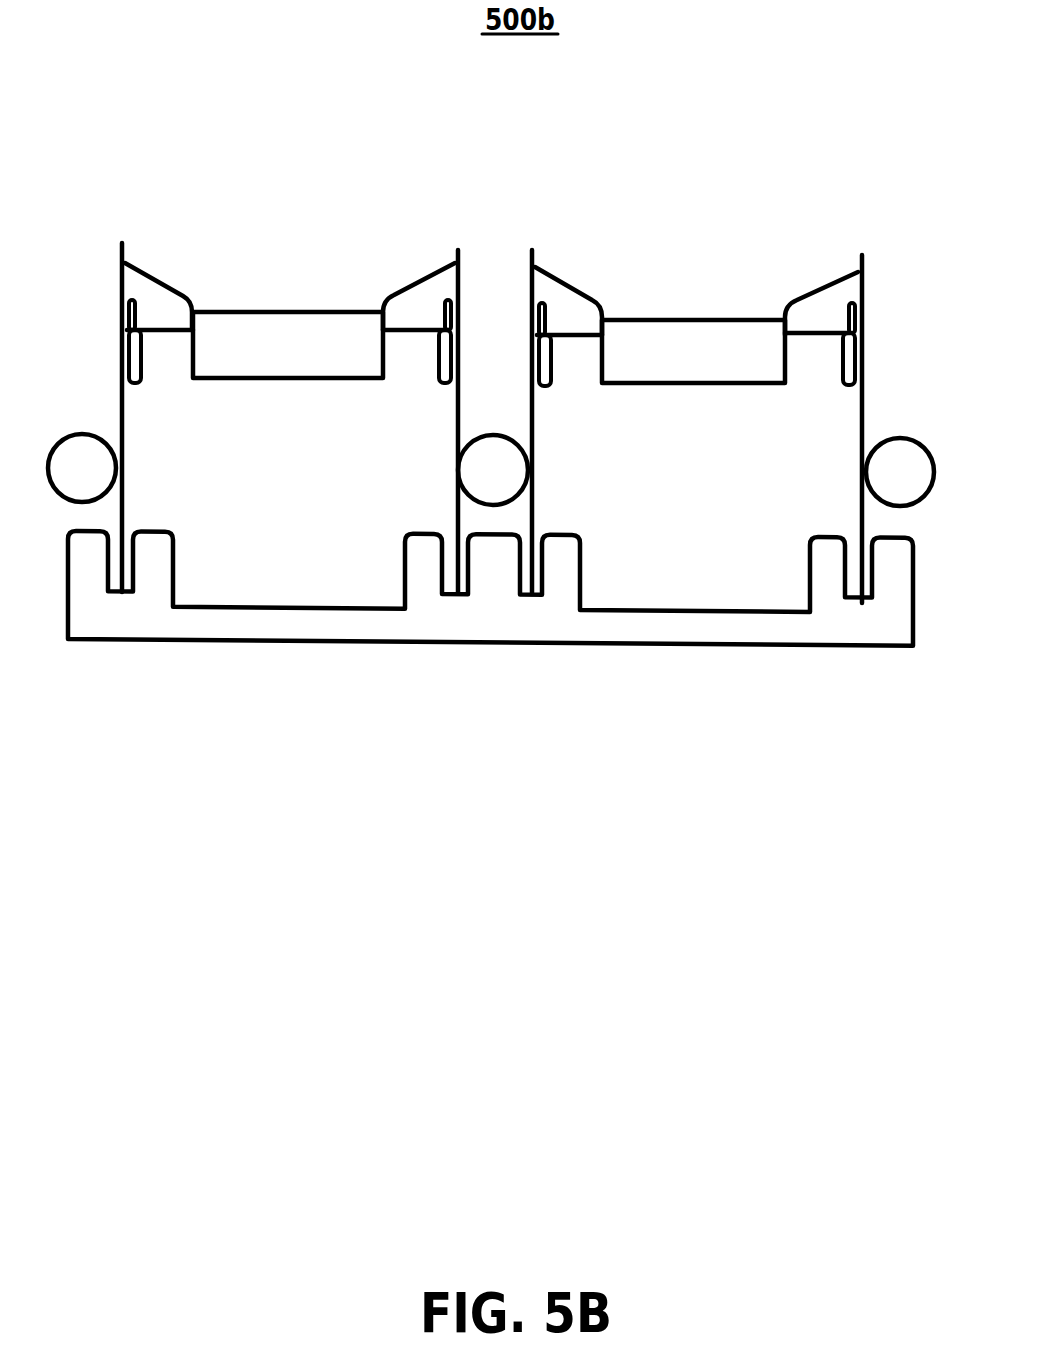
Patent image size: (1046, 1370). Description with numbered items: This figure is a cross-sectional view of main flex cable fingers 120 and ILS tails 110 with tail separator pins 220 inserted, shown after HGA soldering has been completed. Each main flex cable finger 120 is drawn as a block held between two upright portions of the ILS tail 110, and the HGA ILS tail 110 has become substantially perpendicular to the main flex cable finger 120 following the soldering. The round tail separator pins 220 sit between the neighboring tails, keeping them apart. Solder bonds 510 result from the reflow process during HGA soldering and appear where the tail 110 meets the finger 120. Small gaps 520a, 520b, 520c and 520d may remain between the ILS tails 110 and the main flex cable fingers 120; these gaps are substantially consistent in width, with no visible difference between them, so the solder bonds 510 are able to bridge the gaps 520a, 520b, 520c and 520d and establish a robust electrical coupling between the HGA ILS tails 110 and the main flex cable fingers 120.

The solder bond 510 is at (168, 262).
The main flex cable finger 120 is at (292, 292).
The gap 520a is at (161, 353).
The gap 520b is at (422, 352).
The gap 520c is at (561, 352).
The gap 520d is at (830, 353).
The ILS tail 110 is at (131, 610).
The tail separator pin 220 is at (498, 474).